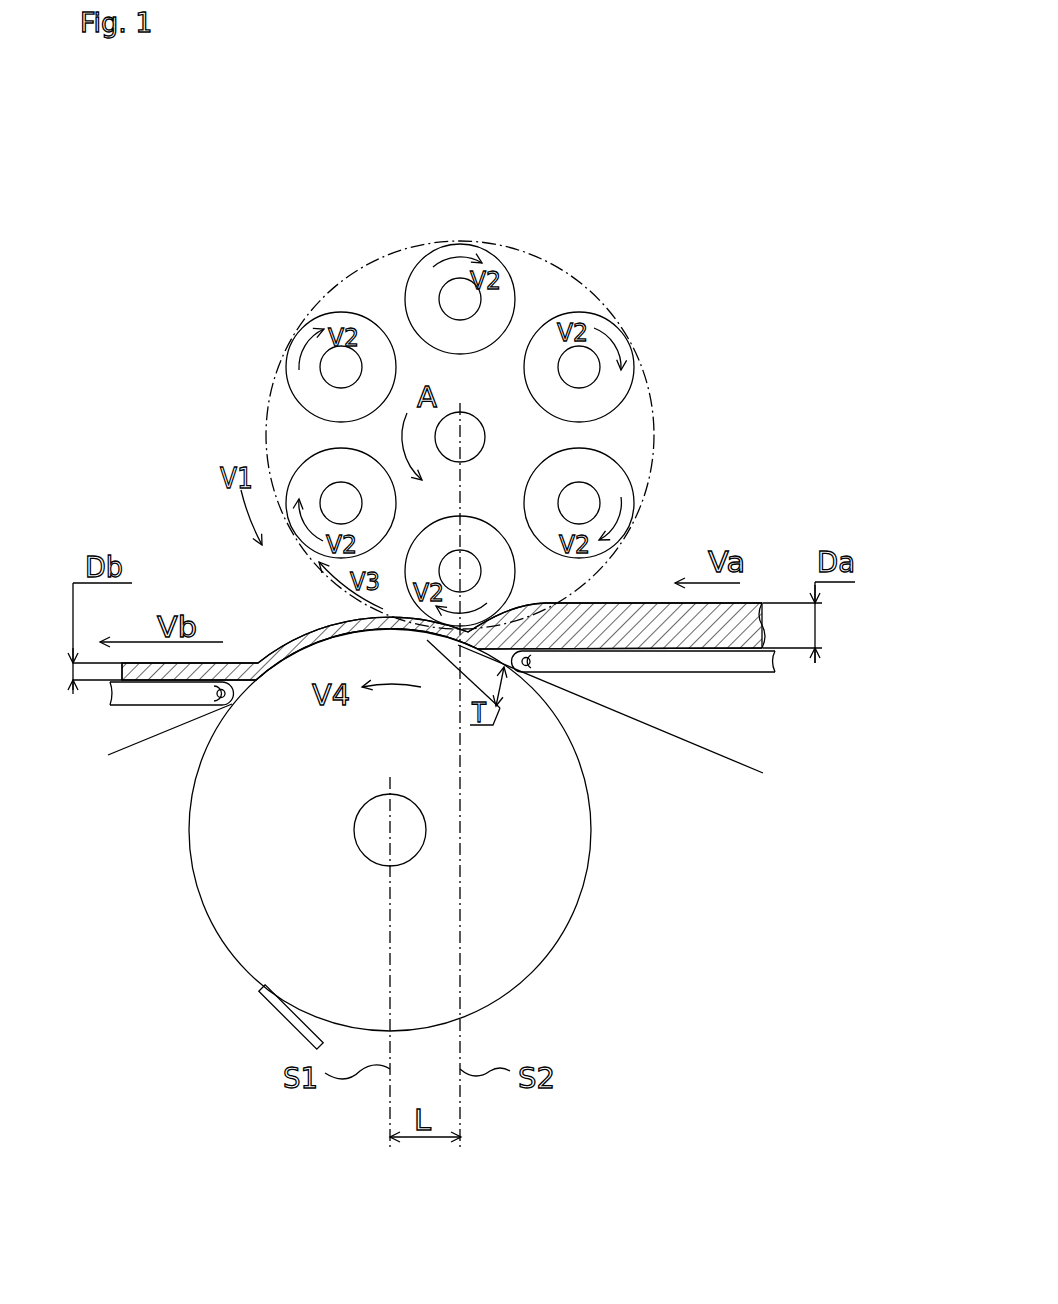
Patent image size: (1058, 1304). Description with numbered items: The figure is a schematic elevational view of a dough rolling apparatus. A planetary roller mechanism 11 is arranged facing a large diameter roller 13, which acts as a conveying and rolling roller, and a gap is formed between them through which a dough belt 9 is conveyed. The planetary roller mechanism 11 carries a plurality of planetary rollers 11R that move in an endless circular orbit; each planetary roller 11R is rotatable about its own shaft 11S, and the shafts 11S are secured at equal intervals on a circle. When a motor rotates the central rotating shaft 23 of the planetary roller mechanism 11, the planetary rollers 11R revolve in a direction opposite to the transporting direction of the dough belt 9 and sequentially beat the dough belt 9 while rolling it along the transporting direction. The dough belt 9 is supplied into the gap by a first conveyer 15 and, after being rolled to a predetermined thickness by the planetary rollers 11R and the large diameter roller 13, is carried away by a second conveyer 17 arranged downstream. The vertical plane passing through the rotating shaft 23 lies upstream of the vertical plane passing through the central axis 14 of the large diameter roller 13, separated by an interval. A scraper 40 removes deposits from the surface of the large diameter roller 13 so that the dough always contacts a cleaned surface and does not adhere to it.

The dough belt 9 is at (752, 607).
The planetary roller mechanism 11 is at (573, 268).
The planetary rollers 11R is at (452, 246).
The shafts 11S is at (446, 300).
The large diameter roller 13 is at (532, 908).
The central axis 14 is at (375, 832).
The first conveyer 15 is at (720, 663).
The second conveyer 17 is at (152, 698).
The rotating shaft 23 is at (470, 437).
The scraper 40 is at (278, 1018).